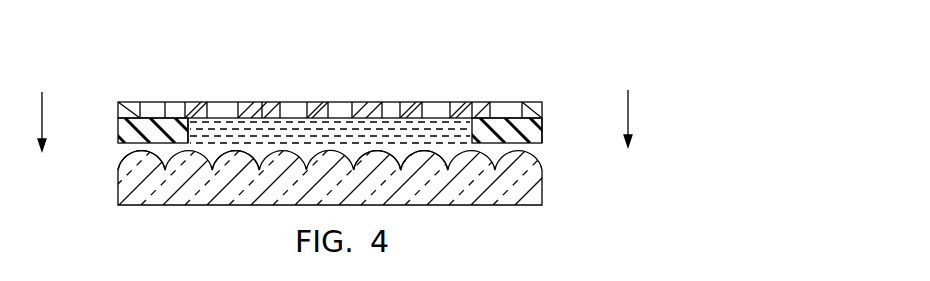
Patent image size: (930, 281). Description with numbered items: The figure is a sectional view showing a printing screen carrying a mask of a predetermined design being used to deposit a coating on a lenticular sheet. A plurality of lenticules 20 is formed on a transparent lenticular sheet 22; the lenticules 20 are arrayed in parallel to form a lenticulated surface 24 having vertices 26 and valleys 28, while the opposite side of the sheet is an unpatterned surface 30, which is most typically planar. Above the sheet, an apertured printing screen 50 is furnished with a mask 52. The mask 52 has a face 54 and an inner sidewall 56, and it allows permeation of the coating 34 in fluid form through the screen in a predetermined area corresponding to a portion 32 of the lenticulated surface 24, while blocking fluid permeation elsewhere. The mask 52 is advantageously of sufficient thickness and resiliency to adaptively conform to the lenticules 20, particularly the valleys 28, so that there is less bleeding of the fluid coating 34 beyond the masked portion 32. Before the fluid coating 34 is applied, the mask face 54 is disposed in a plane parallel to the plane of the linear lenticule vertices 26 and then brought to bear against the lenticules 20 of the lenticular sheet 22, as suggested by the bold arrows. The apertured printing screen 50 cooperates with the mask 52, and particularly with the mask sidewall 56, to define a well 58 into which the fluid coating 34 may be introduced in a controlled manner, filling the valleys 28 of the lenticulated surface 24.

The lenticules 20 is at (138, 150).
The transparent lenticular sheet 22 is at (565, 193).
The lenticulated surface 24 is at (260, 170).
The vertices 26 is at (400, 170).
The valleys 28 is at (353, 170).
The unpatterned surface 30 is at (515, 205).
The portion of the lenticulated surface 32 is at (455, 121).
The coating 34 is at (433, 120).
The apertured printing screen 50 is at (267, 102).
The mask 52 is at (542, 123).
The face 54 is at (163, 139).
The inner sidewall 56 is at (196, 140).
The well 58 is at (358, 128).